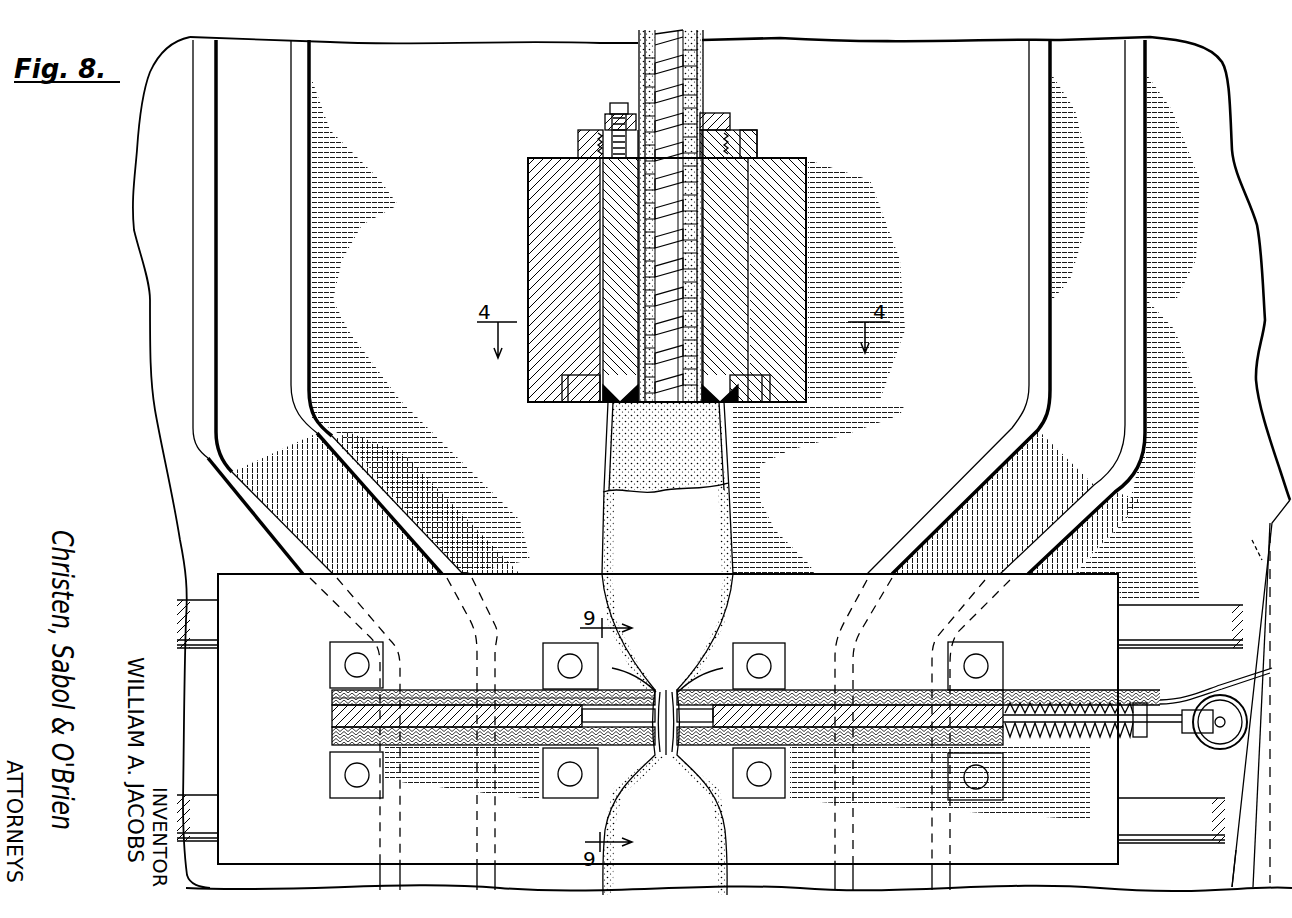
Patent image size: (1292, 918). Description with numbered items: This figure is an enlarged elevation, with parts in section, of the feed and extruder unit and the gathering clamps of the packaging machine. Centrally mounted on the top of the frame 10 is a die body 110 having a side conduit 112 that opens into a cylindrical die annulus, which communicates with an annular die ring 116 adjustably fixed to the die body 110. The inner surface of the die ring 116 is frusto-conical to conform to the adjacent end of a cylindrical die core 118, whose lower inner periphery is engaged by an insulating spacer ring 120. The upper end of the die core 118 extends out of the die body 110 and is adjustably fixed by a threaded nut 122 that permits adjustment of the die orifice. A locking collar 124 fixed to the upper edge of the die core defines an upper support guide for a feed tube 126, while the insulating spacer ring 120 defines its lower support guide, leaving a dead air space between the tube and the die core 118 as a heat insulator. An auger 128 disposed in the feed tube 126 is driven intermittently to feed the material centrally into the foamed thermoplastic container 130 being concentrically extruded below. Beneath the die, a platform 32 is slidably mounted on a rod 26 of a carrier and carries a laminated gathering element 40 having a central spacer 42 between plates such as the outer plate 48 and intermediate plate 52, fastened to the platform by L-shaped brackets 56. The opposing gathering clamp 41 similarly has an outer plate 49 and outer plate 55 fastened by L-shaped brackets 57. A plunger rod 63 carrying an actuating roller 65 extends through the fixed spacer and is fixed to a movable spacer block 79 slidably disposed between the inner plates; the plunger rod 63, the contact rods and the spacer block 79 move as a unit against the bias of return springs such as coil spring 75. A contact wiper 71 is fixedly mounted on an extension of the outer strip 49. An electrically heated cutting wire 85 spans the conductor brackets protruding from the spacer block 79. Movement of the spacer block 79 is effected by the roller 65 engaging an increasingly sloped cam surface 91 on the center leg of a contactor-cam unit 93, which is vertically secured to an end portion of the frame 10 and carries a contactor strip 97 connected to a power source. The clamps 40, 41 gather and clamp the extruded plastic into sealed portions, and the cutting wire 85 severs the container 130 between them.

The frame 10 is at (178, 303).
The rod 26 is at (1195, 623).
The platform 32 is at (265, 608).
The clamping or gathering element 40 is at (413, 696).
The gathering clamp 41 is at (795, 698).
The central spacer 42 is at (333, 714).
The outer plate 48 is at (333, 692).
The outer plate 49 is at (860, 700).
The intermediate plate 52 is at (333, 736).
The outer plate 55 is at (872, 742).
The L-shaped bracket 56 is at (555, 652).
The L-shaped bracket 57 is at (1003, 660).
The plunger rod 63 is at (1030, 720).
The actuating roller 65 is at (1208, 742).
The contact wiper 71 is at (1248, 694).
The coil spring 75 is at (1082, 724).
The movable spacer block 79 is at (780, 722).
The electrically heated cutting wire 85 is at (700, 715).
The cam surface 91 is at (1234, 869).
The contactor-cam unit 93 is at (1288, 507).
The contactor strip 97 is at (1266, 555).
The die body 110 is at (528, 195).
The side conduit 112 is at (605, 260).
The annular die ring 116 is at (588, 400).
The cylindrical die core 118 is at (612, 405).
The insulating spacer ring 120 is at (745, 410).
The threaded nut 122 is at (748, 135).
The locking collar 124 is at (713, 113).
The feed tube 126 is at (702, 48).
The auger 128 is at (652, 86).
The container 130 is at (670, 536).